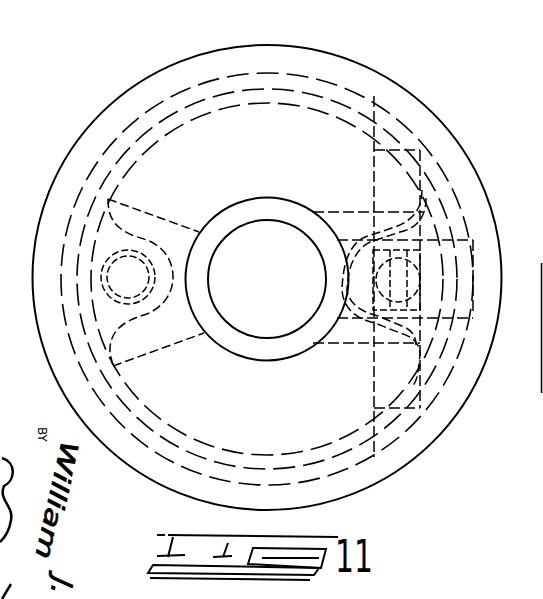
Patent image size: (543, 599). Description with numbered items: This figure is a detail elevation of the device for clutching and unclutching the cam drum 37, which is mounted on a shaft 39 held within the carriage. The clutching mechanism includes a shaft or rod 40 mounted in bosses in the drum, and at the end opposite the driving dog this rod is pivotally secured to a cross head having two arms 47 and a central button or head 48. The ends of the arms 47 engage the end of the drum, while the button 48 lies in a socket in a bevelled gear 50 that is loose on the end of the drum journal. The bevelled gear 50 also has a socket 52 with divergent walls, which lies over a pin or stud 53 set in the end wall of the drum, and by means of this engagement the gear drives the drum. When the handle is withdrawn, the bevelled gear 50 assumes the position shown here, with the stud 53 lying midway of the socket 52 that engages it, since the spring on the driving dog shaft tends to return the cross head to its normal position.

The cam drum 37 is at (393, 241).
The shaft 39 is at (285, 245).
The shaft or rod 40 is at (423, 277).
The arms 47 is at (437, 151).
The central button or head 48 is at (460, 212).
The bevelled gear 50 is at (411, 95).
The socket 52 is at (172, 341).
The pin or stud 53 is at (113, 289).